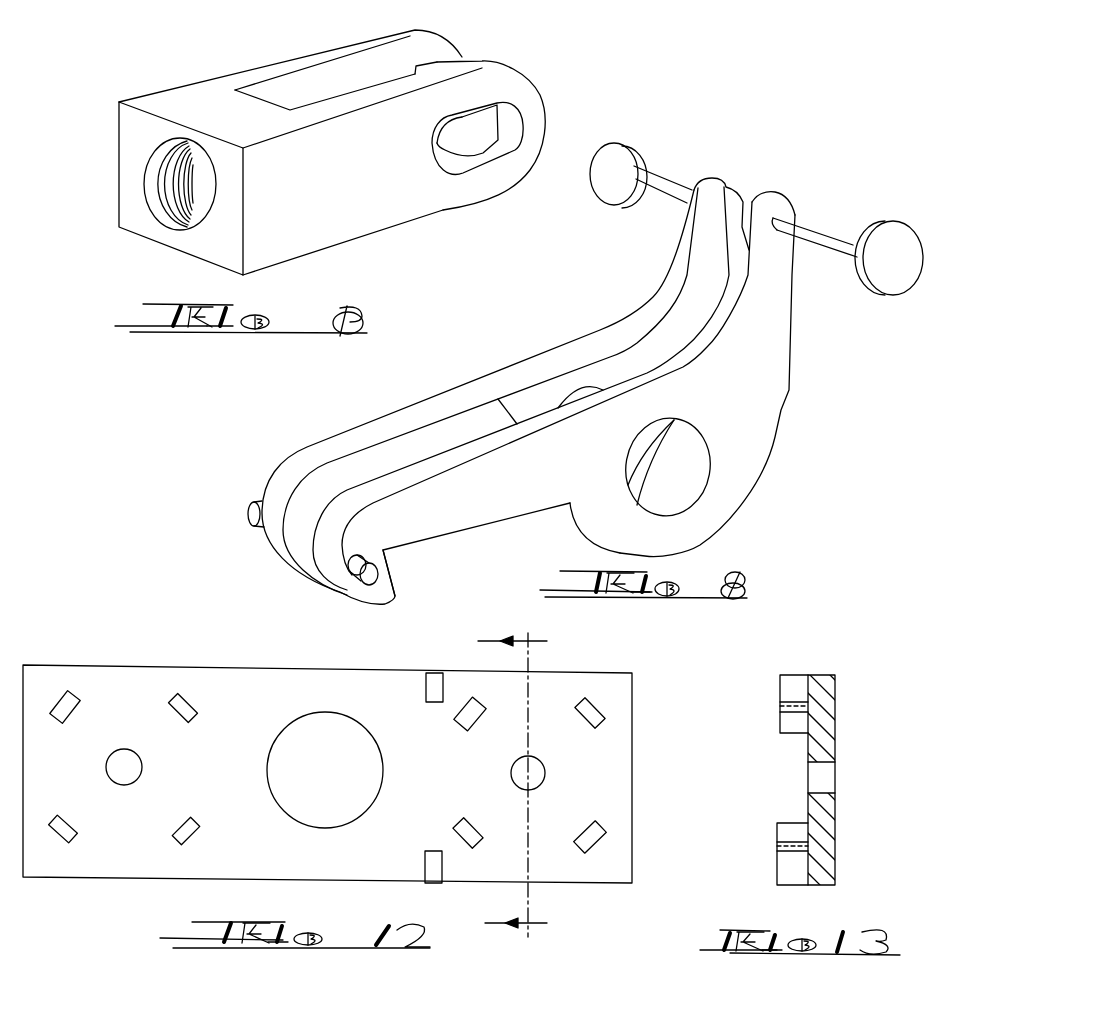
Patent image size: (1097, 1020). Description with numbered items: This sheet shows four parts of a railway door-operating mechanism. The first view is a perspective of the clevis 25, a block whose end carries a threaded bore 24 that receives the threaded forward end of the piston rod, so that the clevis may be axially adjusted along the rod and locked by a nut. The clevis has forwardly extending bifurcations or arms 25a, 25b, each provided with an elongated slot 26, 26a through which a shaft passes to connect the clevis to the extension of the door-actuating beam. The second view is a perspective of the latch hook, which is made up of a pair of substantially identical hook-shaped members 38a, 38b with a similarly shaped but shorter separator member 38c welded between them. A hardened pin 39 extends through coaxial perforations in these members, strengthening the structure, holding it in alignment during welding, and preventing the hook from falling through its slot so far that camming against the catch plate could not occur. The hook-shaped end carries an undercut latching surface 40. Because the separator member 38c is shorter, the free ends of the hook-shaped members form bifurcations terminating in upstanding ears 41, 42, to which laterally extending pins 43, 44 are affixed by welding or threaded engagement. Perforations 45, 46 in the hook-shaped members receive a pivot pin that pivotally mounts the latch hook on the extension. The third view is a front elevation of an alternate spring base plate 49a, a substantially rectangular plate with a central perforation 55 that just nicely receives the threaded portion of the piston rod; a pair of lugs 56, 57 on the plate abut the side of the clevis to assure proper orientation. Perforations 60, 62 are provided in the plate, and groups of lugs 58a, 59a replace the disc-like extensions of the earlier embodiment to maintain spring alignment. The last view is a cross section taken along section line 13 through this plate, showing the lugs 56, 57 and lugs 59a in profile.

In FIG. 6, the bore 24 is at (163, 208).
In FIG. 6, the clevis 25 is at (197, 97).
In FIG. 6, the arm 25a is at (473, 70).
In FIG. 6, the arm 25b is at (333, 55).
In FIG. 6, the elongated slot 26 is at (487, 157).
In FIG. 6, the elongated slot 26a is at (437, 53).
In FIG. 8, the hook-shaped member 38a is at (440, 520).
In FIG. 8, the hook-shaped member 38b is at (307, 462).
In FIG. 8, the separator member 38c is at (432, 438).
In FIG. 8, the hardened pin 39 is at (361, 582).
In FIG. 8, the undercut latching surface 40 is at (387, 560).
In FIG. 8, the upstanding ear 41 is at (787, 207).
In FIG. 8, the upstanding ear 42 is at (737, 190).
In FIG. 8, the laterally extending pin 43 is at (853, 247).
In FIG. 8, the laterally extending pin 44 is at (627, 192).
In FIG. 8, the perforation 45 is at (697, 480).
In FIG. 8, the perforation 46 is at (585, 388).
In FIG. 12, the spring base plate 49a is at (606, 672).
In FIG. 13, the spring base plate 49a is at (835, 858).
In FIG. 12, the central perforation 55 is at (267, 772).
In FIG. 12, the lug 56 is at (433, 678).
In FIG. 13, the lug 56 is at (793, 680).
In FIG. 12, the lug 57 is at (442, 883).
In FIG. 13, the lug 57 is at (790, 878).
In FIG. 12, the lugs 58a is at (68, 693).
In FIG. 12, the lugs 59a is at (467, 715).
In FIG. 13, the lugs 59a is at (790, 723).
In FIG. 12, the perforation 60 is at (547, 773).
In FIG. 13, the perforation 60 is at (830, 775).
In FIG. 12, the perforation 62 is at (143, 767).
In FIG. 12, the section line 13 is at (499, 781).